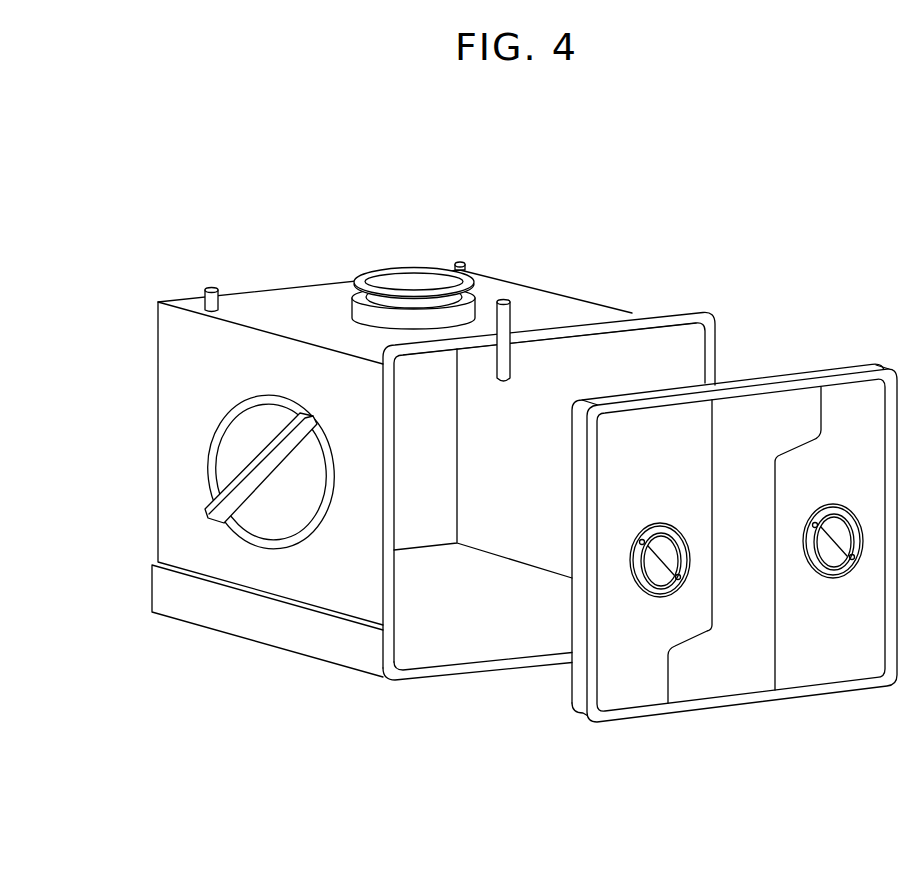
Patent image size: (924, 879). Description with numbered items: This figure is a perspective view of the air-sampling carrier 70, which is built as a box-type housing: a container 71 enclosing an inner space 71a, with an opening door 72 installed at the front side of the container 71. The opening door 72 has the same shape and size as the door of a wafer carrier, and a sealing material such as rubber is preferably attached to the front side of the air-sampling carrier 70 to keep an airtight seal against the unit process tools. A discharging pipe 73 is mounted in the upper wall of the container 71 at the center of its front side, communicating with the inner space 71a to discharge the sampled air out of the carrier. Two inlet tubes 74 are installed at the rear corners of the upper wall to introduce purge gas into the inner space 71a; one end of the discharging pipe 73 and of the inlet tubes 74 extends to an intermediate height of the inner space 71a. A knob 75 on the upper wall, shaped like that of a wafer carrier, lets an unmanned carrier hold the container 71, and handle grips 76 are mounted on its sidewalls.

The air-sampling carrier 70 is at (705, 181).
The container 71 is at (262, 295).
The inner space 71a is at (652, 348).
The opening door 72 is at (632, 697).
The discharging pipe 73 is at (503, 303).
The inlet tubes 74 is at (203, 292).
The knob 75 is at (413, 268).
The handle grips 76 is at (228, 477).